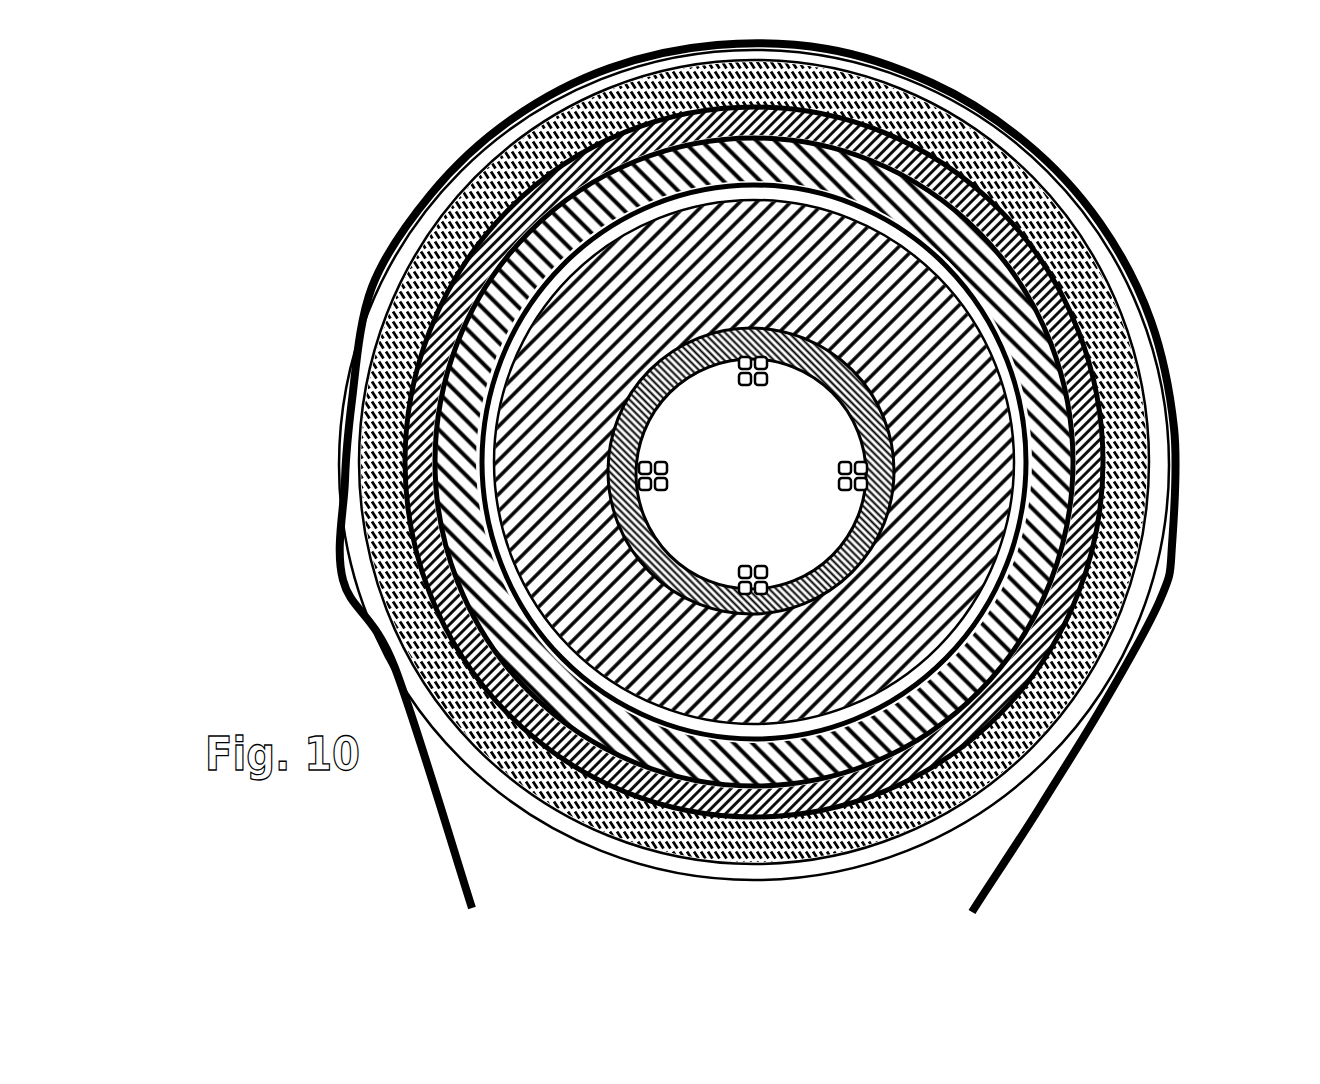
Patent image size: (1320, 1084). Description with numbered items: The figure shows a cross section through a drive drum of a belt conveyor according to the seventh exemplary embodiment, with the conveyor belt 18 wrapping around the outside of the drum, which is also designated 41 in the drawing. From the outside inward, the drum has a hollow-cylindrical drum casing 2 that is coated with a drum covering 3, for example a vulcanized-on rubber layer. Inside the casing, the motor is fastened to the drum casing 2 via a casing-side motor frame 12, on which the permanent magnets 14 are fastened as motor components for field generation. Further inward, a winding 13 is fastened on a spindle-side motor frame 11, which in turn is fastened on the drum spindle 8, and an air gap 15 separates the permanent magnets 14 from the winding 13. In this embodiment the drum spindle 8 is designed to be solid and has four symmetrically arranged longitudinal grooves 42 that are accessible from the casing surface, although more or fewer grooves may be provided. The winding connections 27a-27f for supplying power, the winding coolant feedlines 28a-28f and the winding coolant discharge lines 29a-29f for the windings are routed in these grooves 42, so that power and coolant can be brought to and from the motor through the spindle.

The cylinder 41 is at (166, 74).
The longitudinal grooves 42 is at (1207, 313).
The winding connections 27a-27f is at (732, 367).
The winding coolant feedlines 28a-28f is at (838, 477).
The winding coolant discharge lines 29a-29f is at (735, 578).
The conveyor belt 18 is at (1057, 170).
The casing-side motor frame 12 is at (1017, 225).
The permanent magnets 14 is at (983, 281).
The air gap 15 is at (1005, 420).
The winding 13 is at (957, 481).
The spindle-side motor frame 11 is at (877, 572).
The drum spindle 8 is at (830, 527).
The drum casing 2 is at (1045, 683).
The drum covering 3 is at (1043, 742).